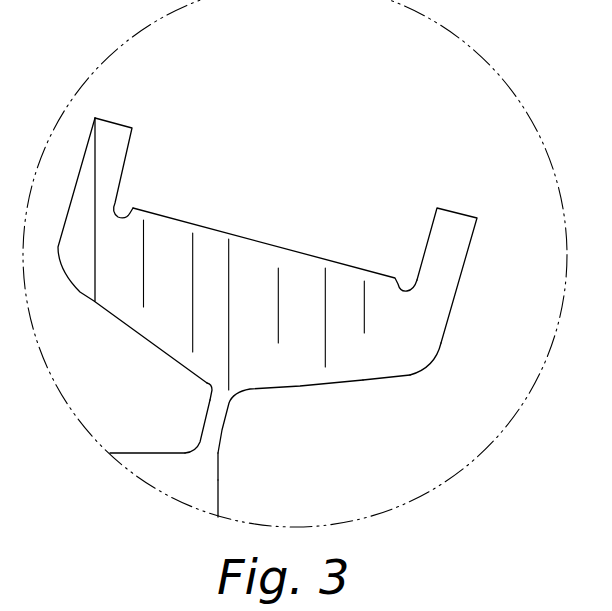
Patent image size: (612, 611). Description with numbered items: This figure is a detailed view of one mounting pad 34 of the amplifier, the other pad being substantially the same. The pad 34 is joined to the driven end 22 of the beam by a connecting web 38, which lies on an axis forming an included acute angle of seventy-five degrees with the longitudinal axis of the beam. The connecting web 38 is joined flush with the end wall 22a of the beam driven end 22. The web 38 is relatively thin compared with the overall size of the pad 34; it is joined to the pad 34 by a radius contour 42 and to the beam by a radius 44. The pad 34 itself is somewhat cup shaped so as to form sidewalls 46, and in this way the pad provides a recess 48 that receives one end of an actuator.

The driven end 22 is at (132, 447).
The end wall 22a is at (218, 493).
The mounting pad 34 is at (365, 400).
The connecting web 38 is at (222, 421).
The radius contour 42 is at (208, 389).
The radius 44 is at (192, 448).
The sidewalls 46 is at (130, 147).
The recess 48 is at (288, 203).